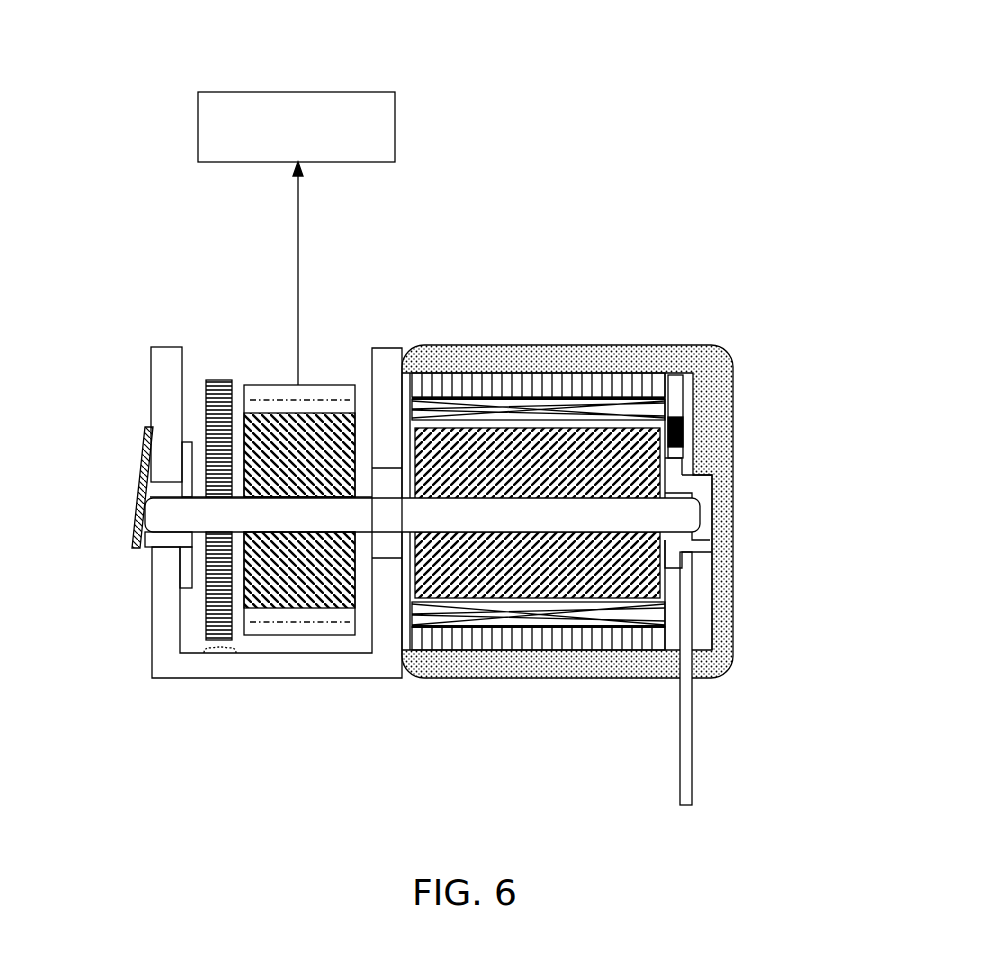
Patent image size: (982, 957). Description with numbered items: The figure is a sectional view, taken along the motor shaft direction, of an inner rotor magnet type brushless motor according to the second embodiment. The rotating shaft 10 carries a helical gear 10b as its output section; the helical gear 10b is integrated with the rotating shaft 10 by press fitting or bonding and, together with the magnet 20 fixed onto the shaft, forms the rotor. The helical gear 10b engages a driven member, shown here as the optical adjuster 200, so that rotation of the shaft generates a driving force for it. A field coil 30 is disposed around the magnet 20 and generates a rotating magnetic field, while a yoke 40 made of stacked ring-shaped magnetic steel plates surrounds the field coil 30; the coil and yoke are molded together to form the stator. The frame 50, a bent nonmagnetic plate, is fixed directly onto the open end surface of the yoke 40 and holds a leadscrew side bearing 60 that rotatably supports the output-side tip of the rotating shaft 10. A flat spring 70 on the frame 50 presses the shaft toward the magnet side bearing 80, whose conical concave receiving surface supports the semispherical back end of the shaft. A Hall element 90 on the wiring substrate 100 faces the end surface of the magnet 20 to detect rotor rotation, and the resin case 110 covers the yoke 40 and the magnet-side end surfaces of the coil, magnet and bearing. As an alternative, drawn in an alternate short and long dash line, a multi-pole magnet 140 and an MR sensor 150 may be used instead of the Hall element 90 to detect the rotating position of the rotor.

The optical adjuster 200 is at (258, 238).
The rotating shaft 10 is at (422, 644).
The helical gear 10b is at (267, 442).
The magnet 20 is at (496, 423).
The field coil 30 is at (514, 423).
The yoke 40 is at (537, 419).
The frame 50 is at (276, 574).
The leadscrew side bearing 60 is at (127, 453).
The flat spring 70 is at (97, 476).
The magnet side bearing 80 is at (737, 649).
The Hall element 90 is at (641, 331).
The wiring substrate 100 is at (594, 438).
The case 110 is at (761, 479).
The magnet 140 is at (158, 356).
The MR sensor 150 is at (173, 659).